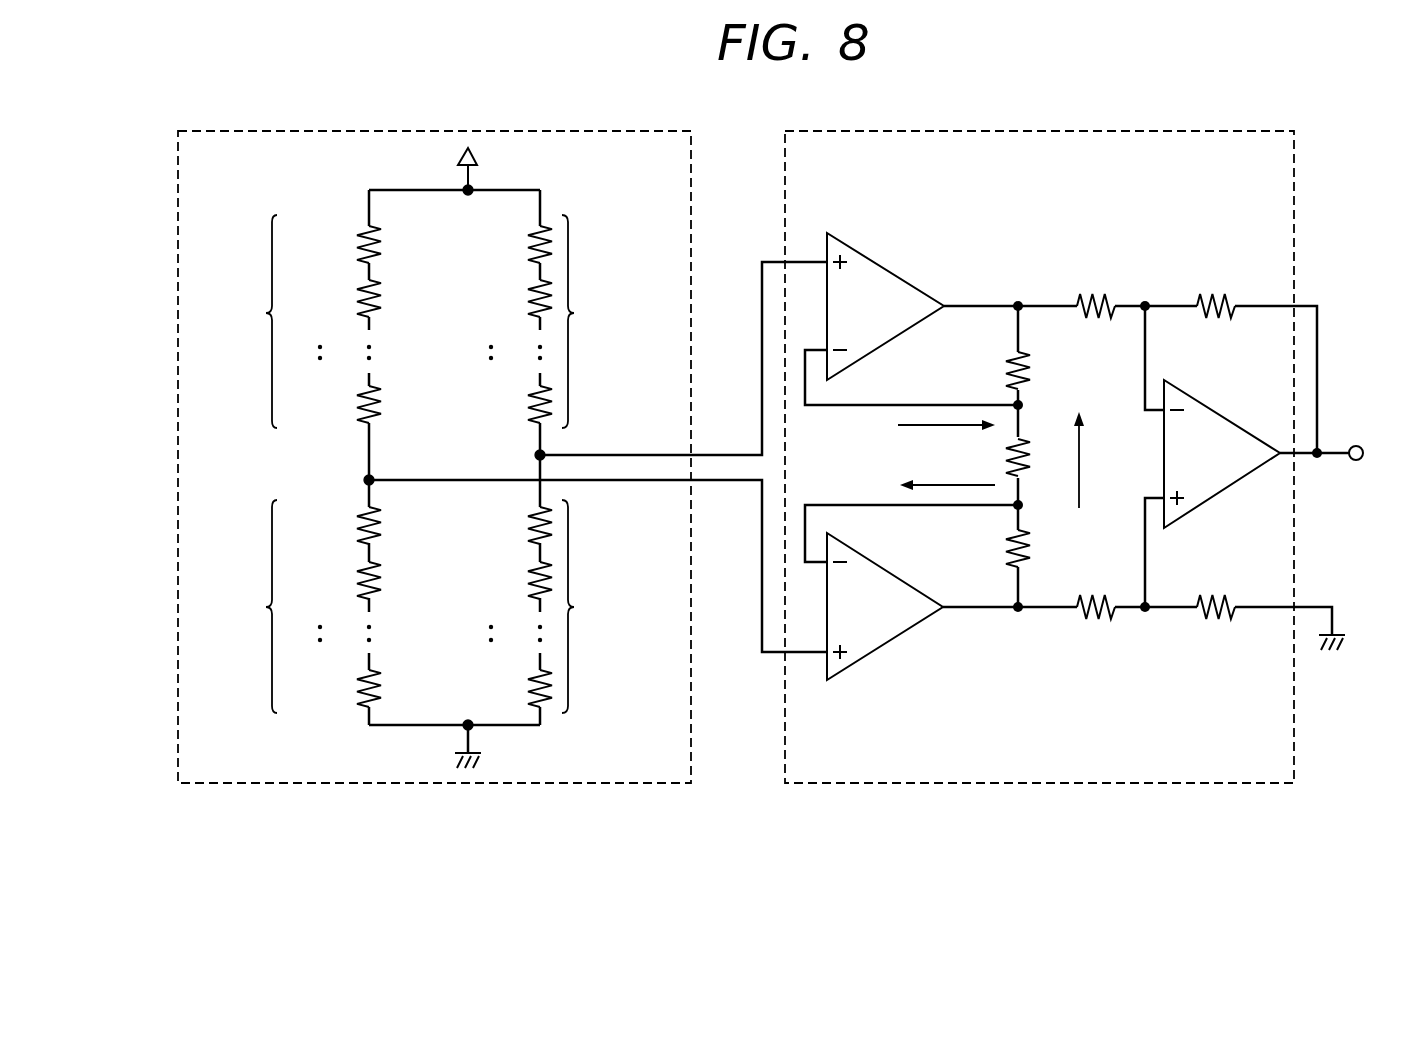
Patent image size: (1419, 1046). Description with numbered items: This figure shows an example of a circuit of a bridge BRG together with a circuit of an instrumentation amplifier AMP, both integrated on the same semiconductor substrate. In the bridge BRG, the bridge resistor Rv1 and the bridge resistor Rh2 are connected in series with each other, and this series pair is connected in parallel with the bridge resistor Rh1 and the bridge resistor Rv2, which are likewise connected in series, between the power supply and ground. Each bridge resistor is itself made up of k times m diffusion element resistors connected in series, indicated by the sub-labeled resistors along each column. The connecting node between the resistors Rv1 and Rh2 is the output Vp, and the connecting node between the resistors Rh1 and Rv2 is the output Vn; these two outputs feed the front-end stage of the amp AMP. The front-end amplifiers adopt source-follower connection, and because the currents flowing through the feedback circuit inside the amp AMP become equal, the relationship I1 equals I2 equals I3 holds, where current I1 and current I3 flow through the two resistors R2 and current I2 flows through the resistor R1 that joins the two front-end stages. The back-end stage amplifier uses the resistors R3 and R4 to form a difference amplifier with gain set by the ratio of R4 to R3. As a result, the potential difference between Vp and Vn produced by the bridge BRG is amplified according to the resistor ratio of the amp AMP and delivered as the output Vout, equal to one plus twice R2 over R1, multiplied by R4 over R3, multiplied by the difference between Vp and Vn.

The bridge BRG is at (434, 457).
The instrumentation amplifier AMP is at (1102, 457).
The bridge resistor Rv1 is at (299, 321).
The bridge resistor Rh1 is at (541, 321).
The bridge resistor Rh2 is at (299, 606).
The bridge resistor Rv2 is at (542, 606).
The output Vn is at (683, 358).
The output Vp is at (598, 566).
The amplifier output Vout is at (1384, 457).
The resistor R1 is at (1035, 457).
The resistor R2 is at (1003, 459).
The resistor R3 is at (1096, 457).
The resistor R4 is at (1216, 457).
The current I1 is at (934, 485).
The current I2 is at (1090, 460).
The current I3 is at (934, 425).